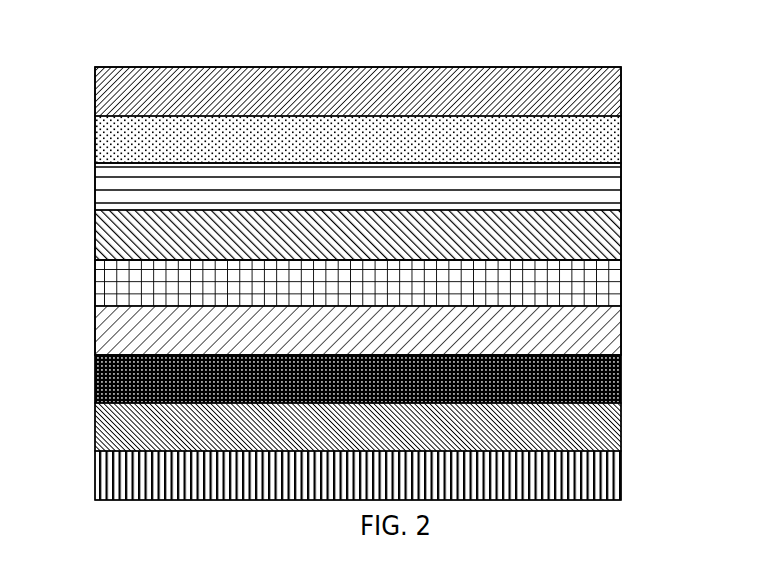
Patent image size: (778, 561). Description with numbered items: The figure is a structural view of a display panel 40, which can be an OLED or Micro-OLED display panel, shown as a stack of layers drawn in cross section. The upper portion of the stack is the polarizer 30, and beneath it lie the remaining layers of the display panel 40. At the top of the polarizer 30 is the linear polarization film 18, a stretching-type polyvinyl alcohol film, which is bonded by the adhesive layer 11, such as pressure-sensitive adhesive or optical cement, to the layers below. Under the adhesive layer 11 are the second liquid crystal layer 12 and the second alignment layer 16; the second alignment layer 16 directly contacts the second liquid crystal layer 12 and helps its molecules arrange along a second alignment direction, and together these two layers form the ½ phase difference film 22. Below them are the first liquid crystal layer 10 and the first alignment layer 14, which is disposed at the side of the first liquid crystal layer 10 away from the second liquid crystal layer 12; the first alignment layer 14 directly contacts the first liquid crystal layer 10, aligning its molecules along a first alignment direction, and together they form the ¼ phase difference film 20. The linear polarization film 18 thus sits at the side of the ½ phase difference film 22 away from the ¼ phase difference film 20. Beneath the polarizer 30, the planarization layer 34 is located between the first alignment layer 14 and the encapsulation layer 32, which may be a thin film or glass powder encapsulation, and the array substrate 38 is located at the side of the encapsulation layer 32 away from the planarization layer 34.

The display panel 40 is at (40, 68).
The polarizer 30 is at (80, 60).
The linear polarization film 18 is at (597, 93).
The adhesive layer 11 is at (600, 147).
The second liquid crystal layer 12 is at (598, 193).
The second alignment layer 16 is at (598, 240).
The ½ phase difference film 22 is at (710, 125).
The first liquid crystal layer 10 is at (598, 290).
The first alignment layer 14 is at (603, 337).
The ¼ phase difference film 20 is at (708, 222).
The encapsulation layer 32 is at (602, 383).
The planarization layer 34 is at (600, 430).
The array substrate 38 is at (600, 487).